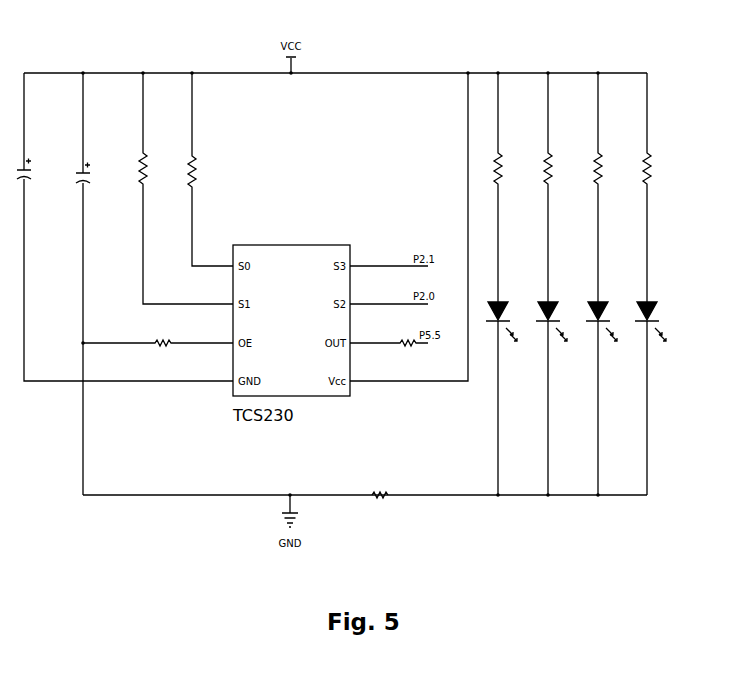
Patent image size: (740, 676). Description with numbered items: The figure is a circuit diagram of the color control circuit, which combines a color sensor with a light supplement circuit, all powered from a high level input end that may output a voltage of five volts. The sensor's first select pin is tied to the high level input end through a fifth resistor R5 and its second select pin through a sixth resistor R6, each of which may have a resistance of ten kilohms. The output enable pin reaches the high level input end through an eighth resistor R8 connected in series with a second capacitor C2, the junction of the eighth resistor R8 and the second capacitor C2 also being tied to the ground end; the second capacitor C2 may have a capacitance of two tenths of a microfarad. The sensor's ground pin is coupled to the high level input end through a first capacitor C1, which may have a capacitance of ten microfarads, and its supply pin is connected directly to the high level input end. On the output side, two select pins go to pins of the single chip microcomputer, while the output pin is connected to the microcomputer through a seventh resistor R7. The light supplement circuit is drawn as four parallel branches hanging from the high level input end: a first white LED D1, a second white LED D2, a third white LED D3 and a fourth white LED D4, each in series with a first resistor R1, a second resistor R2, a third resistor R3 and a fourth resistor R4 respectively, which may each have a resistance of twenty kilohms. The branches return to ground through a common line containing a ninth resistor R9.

The first capacitor C1 is at (125, 227).
The second capacitor C2 is at (90, 284).
The first resistor R1 is at (506, 187).
The second resistor R2 is at (556, 187).
The third resistor R3 is at (605, 187).
The fourth resistor R4 is at (655, 187).
The fifth resistor R5 is at (210, 169).
The sixth resistor R6 is at (186, 188).
The seventh resistor R7 is at (389, 335).
The eighth resistor R8 is at (158, 335).
The ninth resistor R9 is at (379, 482).
The first white LED D1 is at (502, 392).
The second white LED D2 is at (552, 393).
The third white LED D3 is at (601, 391).
The fourth white LED D4 is at (650, 391).